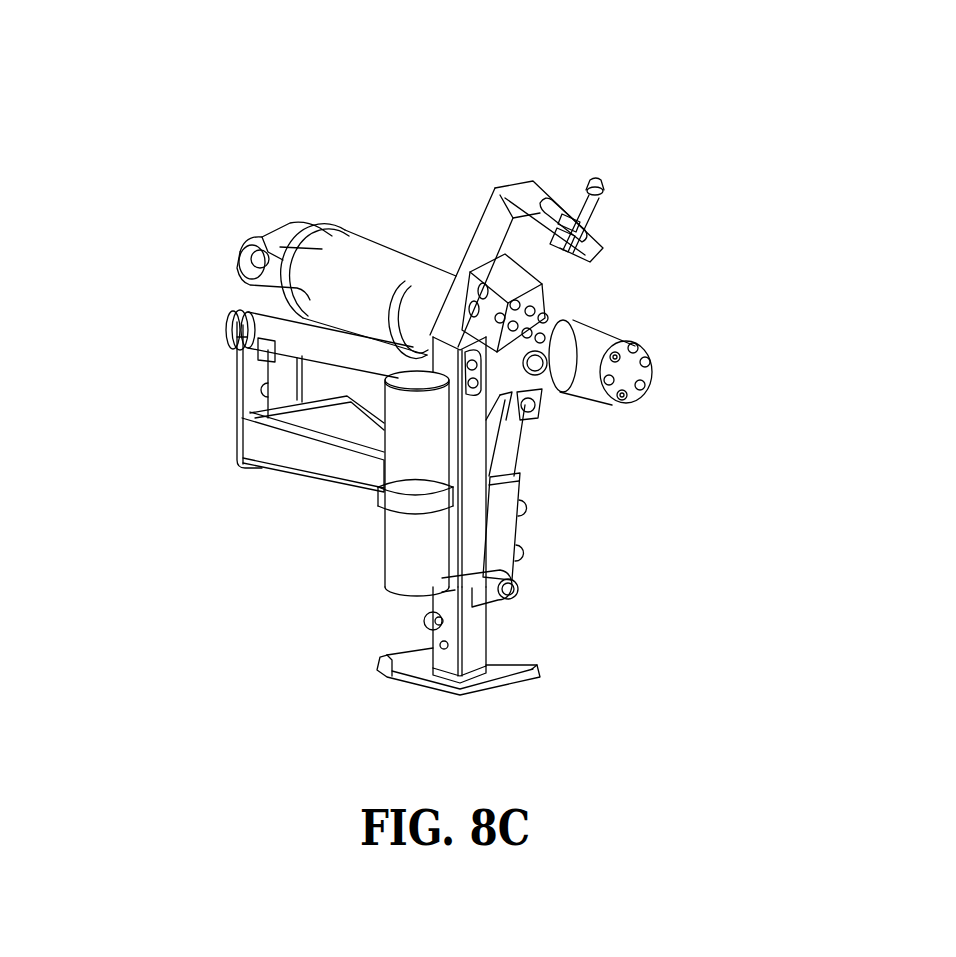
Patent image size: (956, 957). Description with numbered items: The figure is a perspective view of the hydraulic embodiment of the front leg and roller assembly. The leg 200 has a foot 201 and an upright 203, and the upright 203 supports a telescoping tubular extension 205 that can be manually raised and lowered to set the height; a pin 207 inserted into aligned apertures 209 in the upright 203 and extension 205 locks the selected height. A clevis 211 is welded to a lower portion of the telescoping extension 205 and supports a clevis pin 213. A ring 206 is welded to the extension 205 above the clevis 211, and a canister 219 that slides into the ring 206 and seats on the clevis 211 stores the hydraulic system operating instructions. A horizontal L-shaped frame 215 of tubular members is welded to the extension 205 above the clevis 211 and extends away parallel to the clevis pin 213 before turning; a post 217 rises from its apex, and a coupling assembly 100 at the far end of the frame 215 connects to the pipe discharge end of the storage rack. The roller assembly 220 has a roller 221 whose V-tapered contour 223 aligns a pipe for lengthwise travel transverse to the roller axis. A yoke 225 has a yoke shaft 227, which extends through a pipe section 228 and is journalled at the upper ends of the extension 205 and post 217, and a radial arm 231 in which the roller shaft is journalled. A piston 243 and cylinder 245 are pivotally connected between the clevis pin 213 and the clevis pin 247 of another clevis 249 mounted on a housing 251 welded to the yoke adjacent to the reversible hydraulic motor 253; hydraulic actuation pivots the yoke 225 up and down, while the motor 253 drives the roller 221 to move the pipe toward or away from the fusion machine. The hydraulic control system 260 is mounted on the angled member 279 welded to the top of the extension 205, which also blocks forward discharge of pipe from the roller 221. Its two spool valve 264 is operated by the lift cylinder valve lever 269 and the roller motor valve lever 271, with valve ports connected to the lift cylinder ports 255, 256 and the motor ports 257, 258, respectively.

The coupling assembly 100 is at (280, 243).
The leg 200 is at (225, 665).
The foot 201 is at (493, 683).
The upright 203 is at (443, 677).
The telescoping tubular extension 205 is at (475, 633).
The ring 206 is at (390, 500).
The pin 207 is at (423, 620).
The apertures 209 is at (440, 645).
The clevis 211 is at (487, 597).
The clevis pin 213 is at (513, 592).
The L-shaped frame 215 is at (298, 463).
The post 217 is at (252, 387).
The canister 219 is at (397, 552).
The roller assembly 220 is at (313, 80).
The roller 221 is at (353, 228).
The contour 223 is at (390, 250).
The yoke 225 is at (237, 325).
The yoke shaft 227 is at (458, 405).
The pipe section 228 is at (267, 352).
The radial arm 231 is at (273, 303).
The piston 243 is at (512, 450).
The cylinder 245 is at (507, 532).
The clevis pin 247 is at (528, 412).
The clevis 249 is at (520, 418).
The housing 251 is at (458, 443).
The hydraulic motor 253 is at (610, 335).
The lift cylinder port 255 is at (528, 510).
The lift cylinder port 256 is at (523, 563).
The motor port 257 is at (598, 403).
The motor port 258 is at (618, 376).
The hydraulic control system 260 is at (611, 98).
The two spool valve 264 is at (537, 277).
The lift cylinder valve lever 269 is at (572, 235).
The roller motor valve lever 271 is at (598, 190).
The angled member 279 is at (493, 220).